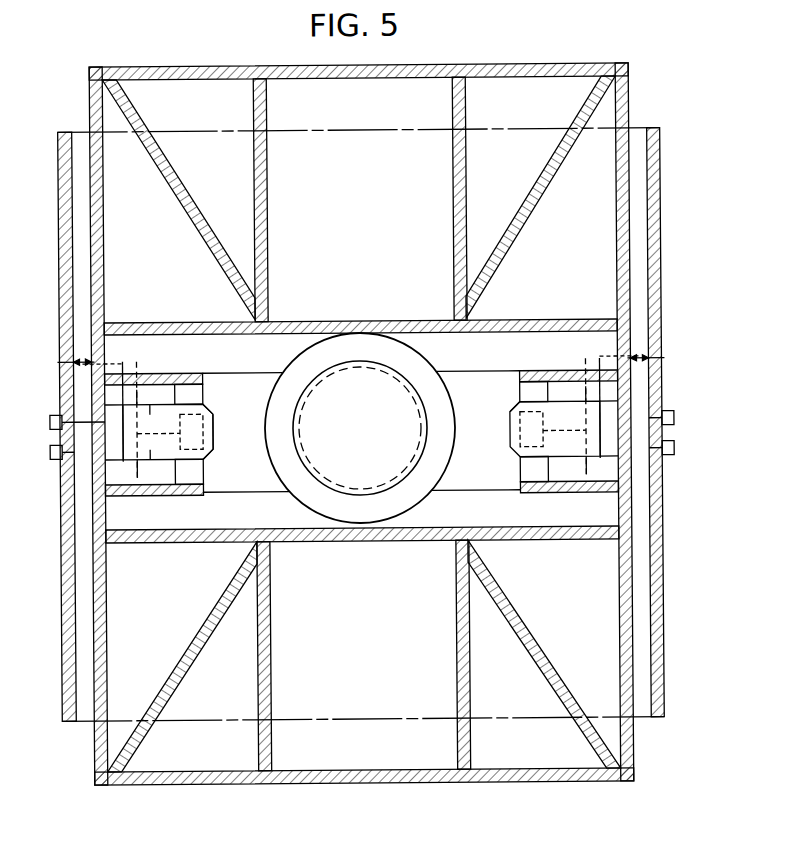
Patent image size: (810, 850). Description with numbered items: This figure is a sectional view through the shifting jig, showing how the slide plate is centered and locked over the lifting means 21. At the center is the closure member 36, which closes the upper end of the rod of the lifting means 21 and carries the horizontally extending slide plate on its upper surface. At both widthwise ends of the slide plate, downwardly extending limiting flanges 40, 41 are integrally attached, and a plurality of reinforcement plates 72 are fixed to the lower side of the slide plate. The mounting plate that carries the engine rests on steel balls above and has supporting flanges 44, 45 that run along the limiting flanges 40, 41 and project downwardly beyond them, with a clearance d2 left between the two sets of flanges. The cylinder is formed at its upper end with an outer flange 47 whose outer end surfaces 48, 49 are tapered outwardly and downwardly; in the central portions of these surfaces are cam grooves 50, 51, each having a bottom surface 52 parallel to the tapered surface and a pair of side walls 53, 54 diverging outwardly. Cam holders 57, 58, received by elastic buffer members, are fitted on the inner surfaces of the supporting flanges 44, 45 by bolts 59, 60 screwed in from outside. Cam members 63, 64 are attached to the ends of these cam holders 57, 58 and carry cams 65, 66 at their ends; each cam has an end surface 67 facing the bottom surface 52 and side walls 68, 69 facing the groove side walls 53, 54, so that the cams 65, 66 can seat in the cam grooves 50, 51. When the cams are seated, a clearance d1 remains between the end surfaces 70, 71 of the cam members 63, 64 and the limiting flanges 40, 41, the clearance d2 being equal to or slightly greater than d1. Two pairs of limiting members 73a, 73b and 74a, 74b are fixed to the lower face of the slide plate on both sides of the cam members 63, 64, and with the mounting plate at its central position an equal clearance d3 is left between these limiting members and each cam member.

The lifting means 21 is at (296, 360).
The closure member 36 is at (372, 444).
The limiting flange 40 is at (105, 615).
The limiting flange 41 is at (618, 602).
The supporting flange 44 is at (60, 607).
The supporting flange 45 is at (662, 601).
The outer flange 47 is at (461, 476).
The outer end surface 48 is at (197, 483).
The outer end surface 49 is at (525, 465).
The cam groove 50 is at (236, 397).
The cam groove 51 is at (508, 410).
The bottom surface 52 is at (205, 431).
The side wall 53 is at (205, 408).
The side wall 54 is at (205, 454).
The cam holder 57 is at (113, 460).
The cam holder 58 is at (610, 460).
The bolt 59 is at (43, 437).
The bolt 60 is at (682, 432).
The cam member 63 is at (168, 383).
The cam member 64 is at (553, 406).
The cam 65 is at (136, 425).
The cam 66 is at (518, 432).
The end surface 67 is at (168, 432).
The side wall 68 is at (157, 416).
The side wall 69 is at (159, 452).
The end surface 70 is at (122, 420).
The end surface 71 is at (600, 425).
The reinforcement plate 72 is at (455, 647).
The limiting member 73a is at (163, 494).
The limiting member 73b is at (196, 372).
The limiting member 74a is at (562, 483).
The limiting member 74b is at (528, 377).
The clearance d1 is at (114, 364).
The clearance d2 is at (60, 360).
The clearance d3 is at (137, 388).